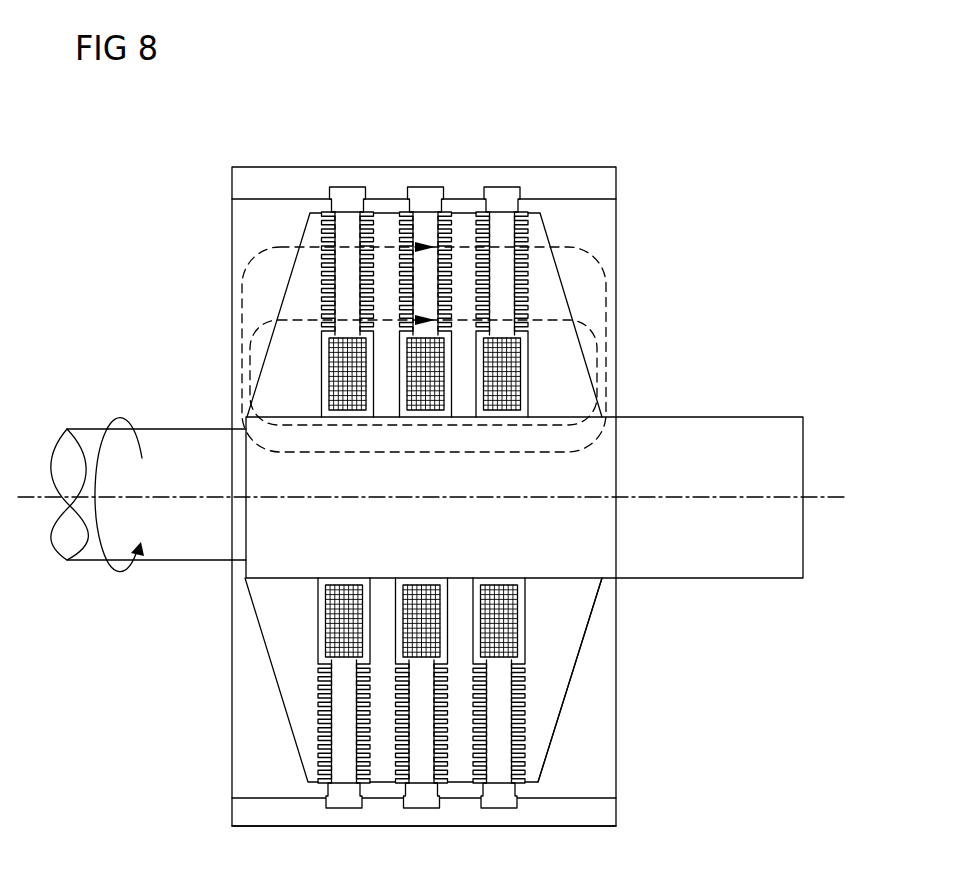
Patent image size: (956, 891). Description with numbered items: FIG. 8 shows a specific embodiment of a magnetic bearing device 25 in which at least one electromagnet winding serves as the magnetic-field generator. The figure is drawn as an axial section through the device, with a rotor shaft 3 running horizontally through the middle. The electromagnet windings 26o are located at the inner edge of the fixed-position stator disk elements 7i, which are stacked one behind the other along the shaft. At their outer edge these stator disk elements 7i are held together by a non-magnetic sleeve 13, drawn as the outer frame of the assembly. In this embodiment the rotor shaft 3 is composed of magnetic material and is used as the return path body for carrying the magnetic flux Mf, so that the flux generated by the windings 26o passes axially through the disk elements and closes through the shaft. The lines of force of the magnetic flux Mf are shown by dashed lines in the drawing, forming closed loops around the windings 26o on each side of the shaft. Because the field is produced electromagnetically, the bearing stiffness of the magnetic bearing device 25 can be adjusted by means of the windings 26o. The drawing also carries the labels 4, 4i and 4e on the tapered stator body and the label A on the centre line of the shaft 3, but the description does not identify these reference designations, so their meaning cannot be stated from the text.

The rotor shaft 3 is at (65, 533).
The stator 4 is at (423, 497).
The inner stator tooth 4i is at (390, 400).
The outer stator part 4e is at (554, 728).
The stator disk elements 7i is at (424, 796).
The non-magnetic sleeve 13 is at (232, 187).
The magnetic bearing device 25 is at (203, 701).
The electromagnet windings 26o is at (520, 384).
The axis of rotation A is at (833, 497).
The magnetic flux Mf is at (250, 352).